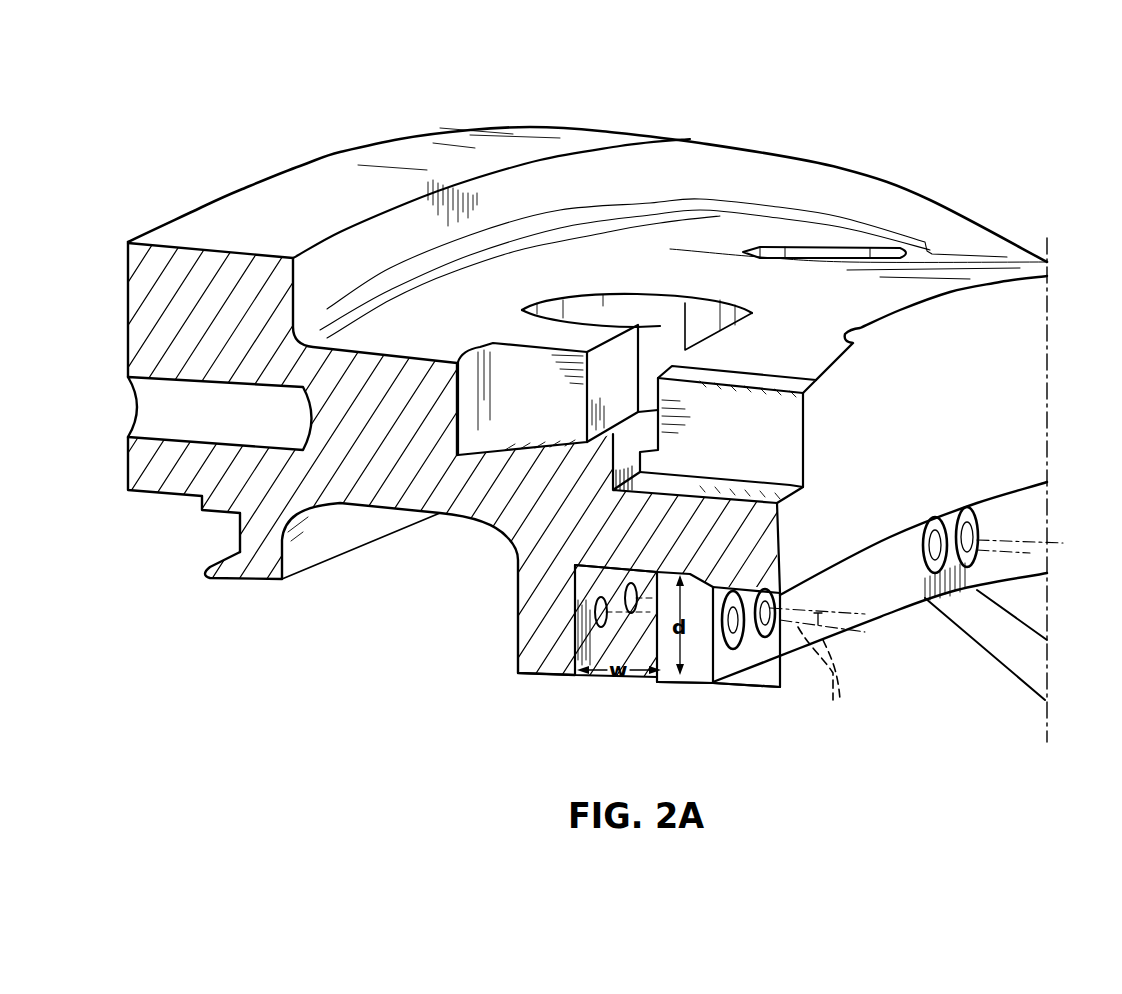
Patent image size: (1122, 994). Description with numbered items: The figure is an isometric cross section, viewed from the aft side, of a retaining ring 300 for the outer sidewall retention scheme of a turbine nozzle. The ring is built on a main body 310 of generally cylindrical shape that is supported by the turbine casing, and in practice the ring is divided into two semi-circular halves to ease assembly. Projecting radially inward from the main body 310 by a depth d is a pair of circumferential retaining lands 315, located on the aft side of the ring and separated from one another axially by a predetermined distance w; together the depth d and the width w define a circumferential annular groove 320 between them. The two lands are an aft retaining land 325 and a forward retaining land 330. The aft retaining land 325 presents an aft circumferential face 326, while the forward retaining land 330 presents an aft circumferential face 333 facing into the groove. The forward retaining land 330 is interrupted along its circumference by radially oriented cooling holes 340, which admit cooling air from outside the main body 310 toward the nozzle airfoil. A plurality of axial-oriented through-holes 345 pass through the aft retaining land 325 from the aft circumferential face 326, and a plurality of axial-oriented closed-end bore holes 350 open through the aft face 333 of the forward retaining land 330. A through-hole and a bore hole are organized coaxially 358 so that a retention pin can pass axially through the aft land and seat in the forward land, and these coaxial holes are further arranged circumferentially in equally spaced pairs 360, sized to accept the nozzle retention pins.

The retaining ring 300 is at (1112, 170).
The main body 310 is at (651, 105).
The circumferential retaining lands 315 is at (710, 713).
The circumferential annular groove 320 is at (640, 658).
The aft retaining land 325 is at (697, 685).
The aft circumferential face 326 is at (847, 583).
The forward retaining land 330 is at (537, 677).
The aft circumferential face 333 is at (592, 588).
The cooling holes 340 is at (830, 250).
The axial-oriented through-holes 345 is at (740, 597).
The axial-oriented closed-end bore holes 350 is at (602, 597).
The coaxially oriented holes 358 is at (823, 670).
The pairs of holes 360 is at (882, 608).